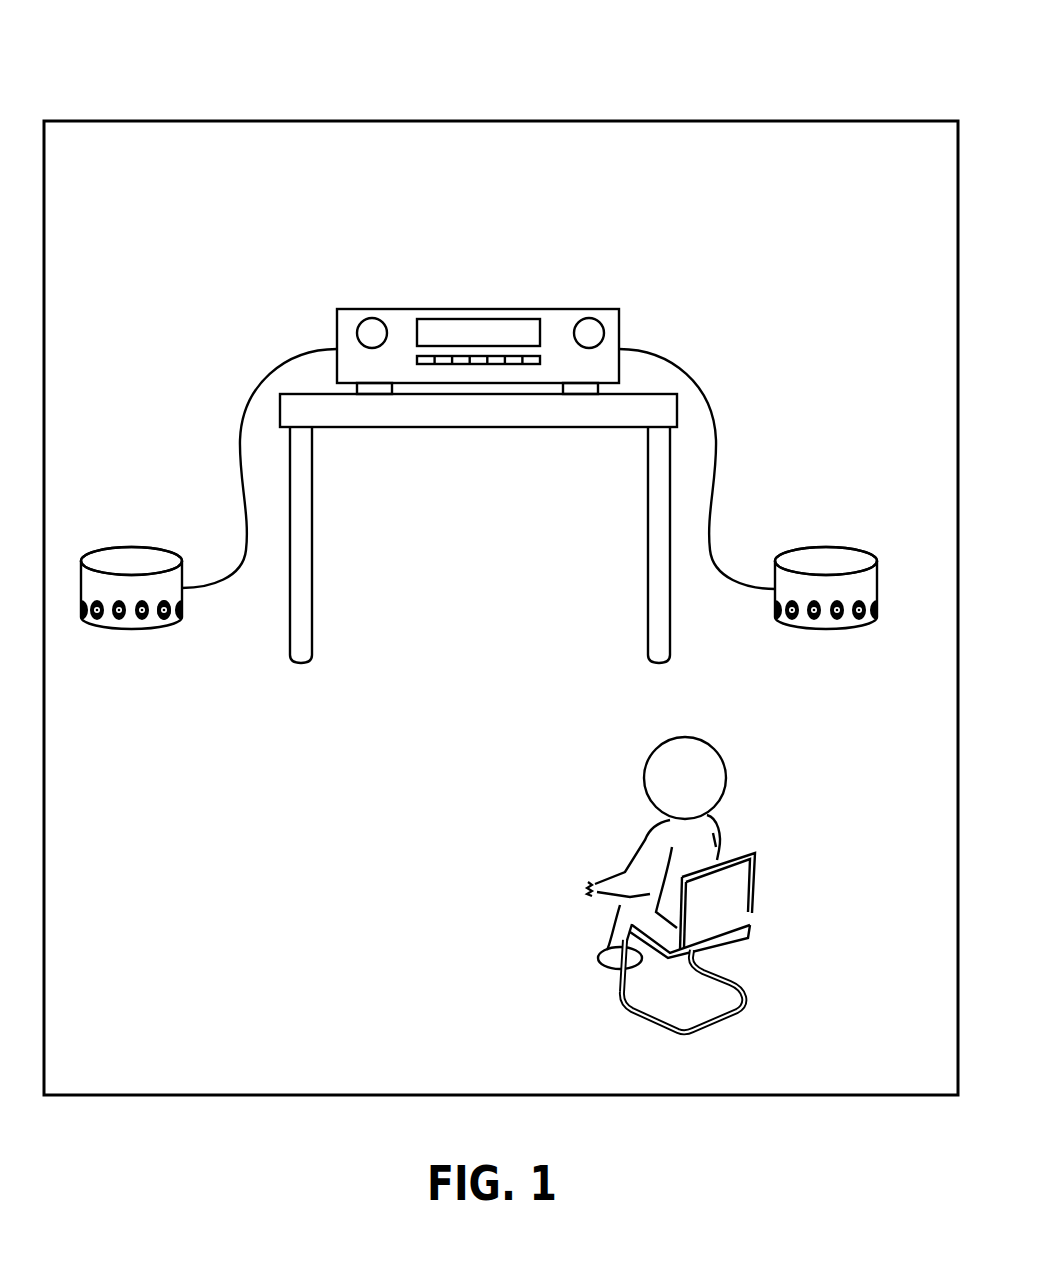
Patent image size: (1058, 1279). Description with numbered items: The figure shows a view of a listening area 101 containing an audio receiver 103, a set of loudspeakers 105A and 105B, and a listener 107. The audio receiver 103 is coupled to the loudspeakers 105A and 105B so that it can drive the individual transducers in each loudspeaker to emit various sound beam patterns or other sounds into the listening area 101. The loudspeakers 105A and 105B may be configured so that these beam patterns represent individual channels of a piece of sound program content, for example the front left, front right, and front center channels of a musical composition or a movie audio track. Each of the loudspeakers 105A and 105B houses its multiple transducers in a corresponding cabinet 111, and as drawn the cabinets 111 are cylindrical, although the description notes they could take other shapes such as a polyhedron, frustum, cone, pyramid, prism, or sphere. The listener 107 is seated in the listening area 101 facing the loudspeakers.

The listening area 101 is at (562, 118).
The audio receiver 103 is at (440, 308).
The loudspeaker 105A is at (160, 562).
The loudspeaker 105B is at (878, 577).
The listener 107 is at (687, 760).
The cabinet 111 is at (102, 547).